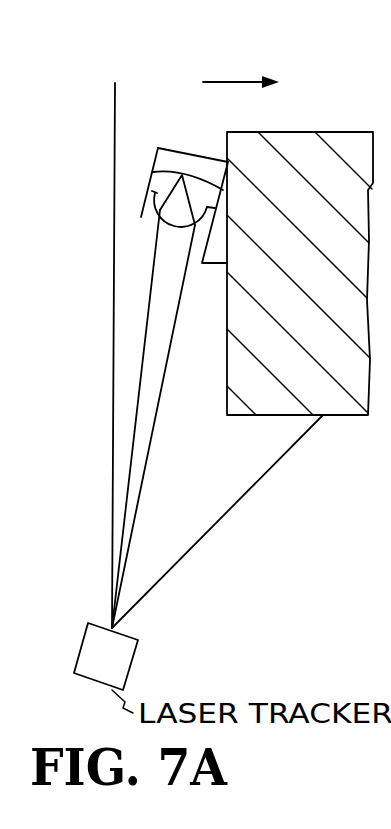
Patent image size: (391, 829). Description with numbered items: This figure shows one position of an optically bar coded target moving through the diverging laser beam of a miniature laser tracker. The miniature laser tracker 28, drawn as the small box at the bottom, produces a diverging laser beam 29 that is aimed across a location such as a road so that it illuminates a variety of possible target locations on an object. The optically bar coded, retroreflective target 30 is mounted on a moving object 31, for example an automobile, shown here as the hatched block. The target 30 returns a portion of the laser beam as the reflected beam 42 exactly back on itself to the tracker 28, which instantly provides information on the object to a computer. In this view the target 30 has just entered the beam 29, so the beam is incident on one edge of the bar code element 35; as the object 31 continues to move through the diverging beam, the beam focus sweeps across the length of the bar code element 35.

The miniature laser tracker 28 is at (138, 656).
The diverging laser beam 29 is at (212, 488).
The optically bar coded retroreflective target 30 is at (158, 150).
The moving object 31 is at (300, 248).
The bar code element 35 is at (194, 160).
The reflected beam 42 is at (168, 356).